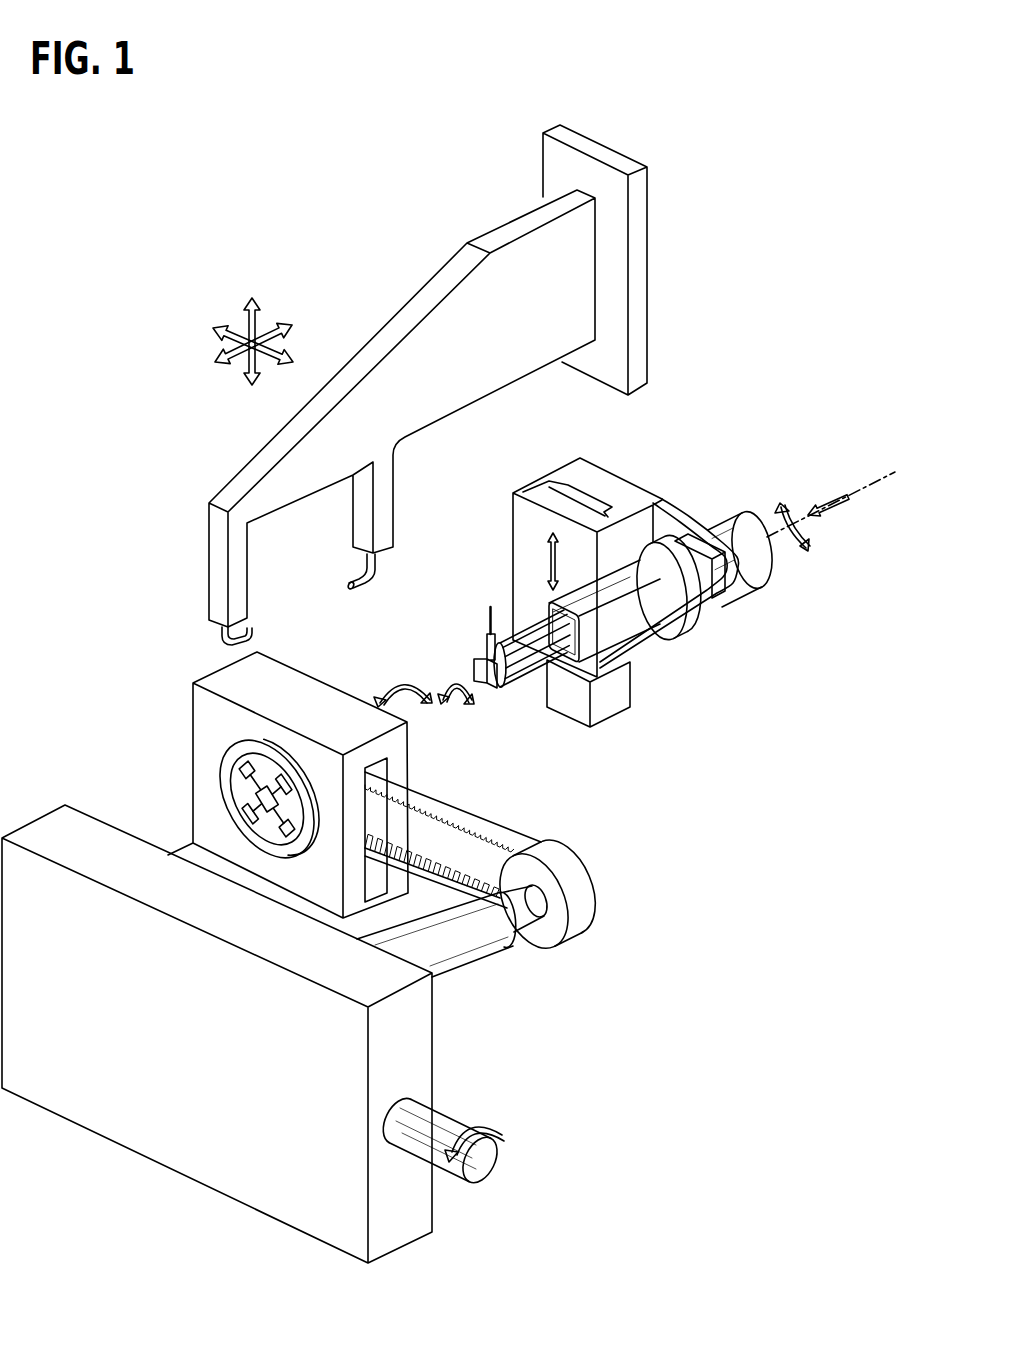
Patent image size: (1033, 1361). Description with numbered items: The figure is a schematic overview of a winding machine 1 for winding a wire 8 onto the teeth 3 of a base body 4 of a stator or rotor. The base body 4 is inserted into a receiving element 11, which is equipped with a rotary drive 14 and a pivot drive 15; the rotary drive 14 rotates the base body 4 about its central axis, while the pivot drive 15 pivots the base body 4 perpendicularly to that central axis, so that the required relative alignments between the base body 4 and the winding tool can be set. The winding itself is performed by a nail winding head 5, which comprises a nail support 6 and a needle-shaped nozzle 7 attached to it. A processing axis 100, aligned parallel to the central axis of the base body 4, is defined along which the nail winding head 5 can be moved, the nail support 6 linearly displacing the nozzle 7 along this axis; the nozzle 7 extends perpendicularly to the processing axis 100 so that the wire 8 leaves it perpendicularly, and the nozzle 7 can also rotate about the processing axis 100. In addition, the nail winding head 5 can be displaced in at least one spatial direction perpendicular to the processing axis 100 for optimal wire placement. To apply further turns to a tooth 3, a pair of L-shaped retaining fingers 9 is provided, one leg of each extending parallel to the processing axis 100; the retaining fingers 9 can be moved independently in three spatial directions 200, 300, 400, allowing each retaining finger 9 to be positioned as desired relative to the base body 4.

The winding machine 1 is at (366, 180).
The teeth 3 is at (263, 830).
The base body 4 is at (247, 758).
The nail winding head 5 is at (608, 675).
The nail support 6 is at (620, 630).
The nozzle 7 is at (487, 644).
The wire 8 is at (490, 616).
The retaining fingers 9 is at (338, 626).
The receiving element 11 is at (255, 682).
The rotary drive 14 is at (588, 958).
The pivot drive 15 is at (497, 1183).
The processing axis 100 is at (885, 472).
The spatial direction 200 is at (247, 306).
The spatial direction 300 is at (215, 327).
The spatial direction 400 is at (215, 358).